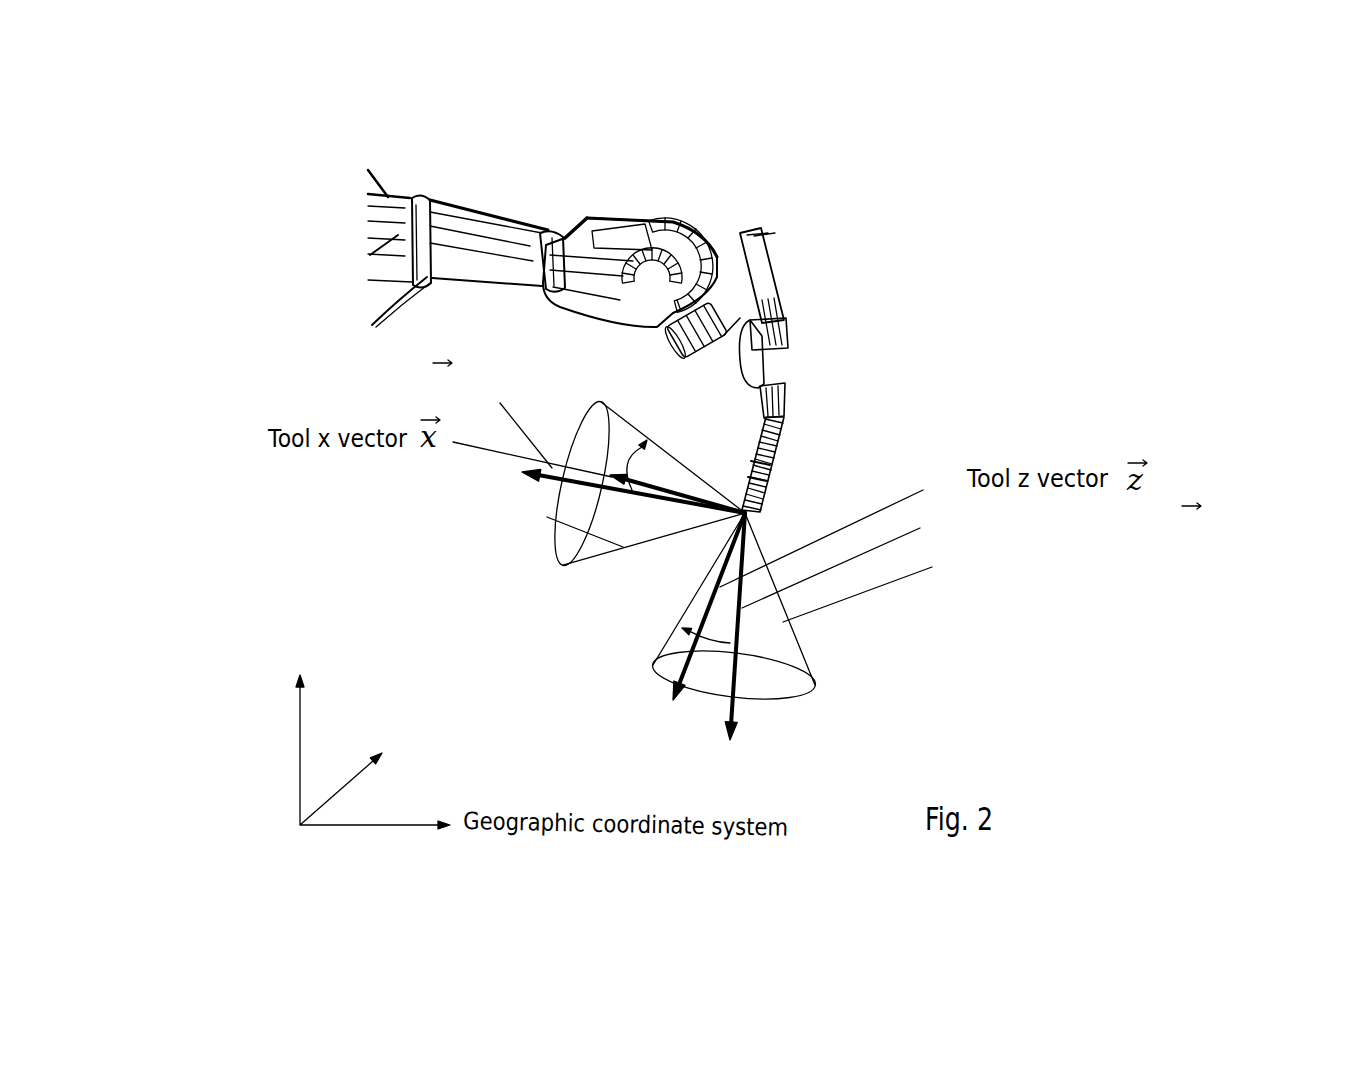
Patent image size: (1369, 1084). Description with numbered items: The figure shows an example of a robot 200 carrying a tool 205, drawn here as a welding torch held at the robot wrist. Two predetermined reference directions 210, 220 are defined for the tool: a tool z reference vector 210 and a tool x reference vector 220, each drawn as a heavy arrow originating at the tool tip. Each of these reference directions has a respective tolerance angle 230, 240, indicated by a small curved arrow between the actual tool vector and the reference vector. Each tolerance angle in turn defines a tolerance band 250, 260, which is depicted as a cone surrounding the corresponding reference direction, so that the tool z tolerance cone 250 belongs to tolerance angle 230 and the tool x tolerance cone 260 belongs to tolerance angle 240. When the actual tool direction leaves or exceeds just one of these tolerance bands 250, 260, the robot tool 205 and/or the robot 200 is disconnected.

The robot 200 is at (600, 218).
The tool 205 is at (770, 478).
The predetermined reference direction 210 is at (979, 601).
The predetermined reference direction 220 is at (425, 436).
The tolerance angle 230 is at (708, 636).
The tolerance angle 240 is at (650, 457).
The tolerance band 250 is at (1003, 610).
The tolerance band 260 is at (412, 483).